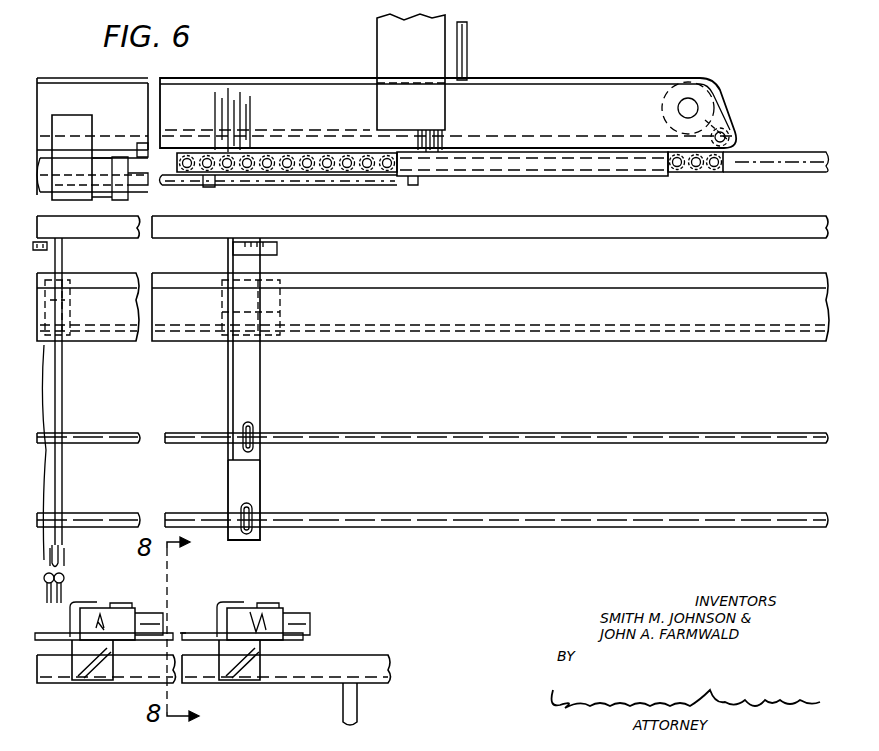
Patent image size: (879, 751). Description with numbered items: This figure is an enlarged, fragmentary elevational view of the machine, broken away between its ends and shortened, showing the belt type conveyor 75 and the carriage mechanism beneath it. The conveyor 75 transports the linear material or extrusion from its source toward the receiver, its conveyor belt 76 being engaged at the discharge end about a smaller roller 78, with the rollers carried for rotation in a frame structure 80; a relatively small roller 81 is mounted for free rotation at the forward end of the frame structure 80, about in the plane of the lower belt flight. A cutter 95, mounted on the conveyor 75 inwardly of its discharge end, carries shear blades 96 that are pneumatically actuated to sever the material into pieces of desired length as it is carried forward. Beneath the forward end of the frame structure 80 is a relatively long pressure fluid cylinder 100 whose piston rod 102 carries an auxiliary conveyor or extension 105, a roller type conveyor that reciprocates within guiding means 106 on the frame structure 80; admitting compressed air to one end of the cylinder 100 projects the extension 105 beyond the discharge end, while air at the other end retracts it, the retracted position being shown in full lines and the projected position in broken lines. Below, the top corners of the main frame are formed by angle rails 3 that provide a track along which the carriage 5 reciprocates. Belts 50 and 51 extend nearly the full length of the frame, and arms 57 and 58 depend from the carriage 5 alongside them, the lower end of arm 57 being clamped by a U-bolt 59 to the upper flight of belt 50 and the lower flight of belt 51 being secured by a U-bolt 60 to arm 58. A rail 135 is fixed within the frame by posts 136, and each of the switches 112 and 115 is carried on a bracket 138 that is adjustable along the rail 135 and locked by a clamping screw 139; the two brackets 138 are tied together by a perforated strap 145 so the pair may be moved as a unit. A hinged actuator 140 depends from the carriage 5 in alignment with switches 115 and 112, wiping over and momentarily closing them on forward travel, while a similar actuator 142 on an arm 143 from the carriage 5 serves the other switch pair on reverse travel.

The angle rails 3 is at (488, 343).
The carriage 5 is at (360, 278).
The carriage propelling belt 50 is at (120, 433).
The carriage propelling belt 51 is at (196, 437).
The arm 57 is at (262, 388).
The arm 58 is at (262, 480).
The U-bolt 59 is at (250, 425).
The U-bolt 60 is at (240, 541).
The belt type conveyor 75 is at (596, 76).
The conveyor belt 76 is at (625, 78).
The roller 78 is at (706, 94).
The frame structure 80 is at (540, 98).
The roller 81 is at (726, 128).
The cutter 95 is at (396, 18).
The shear blades 96 is at (468, 54).
The pressure fluid cylinder 100 is at (100, 165).
The piston rod 102 is at (165, 182).
The auxiliary conveyor or extension 105 is at (335, 170).
The guiding means 106 is at (490, 172).
The switch 112 is at (275, 635).
The switch 115 is at (85, 633).
The rail 135 is at (342, 662).
The posts 136 is at (346, 710).
The bracket 138 is at (115, 660).
The clamping screw 139 is at (82, 680).
The hinged actuator 140 is at (62, 554).
The hinged actuator 142 is at (50, 600).
The arm 143 is at (63, 378).
The perforated straps 145 is at (185, 632).